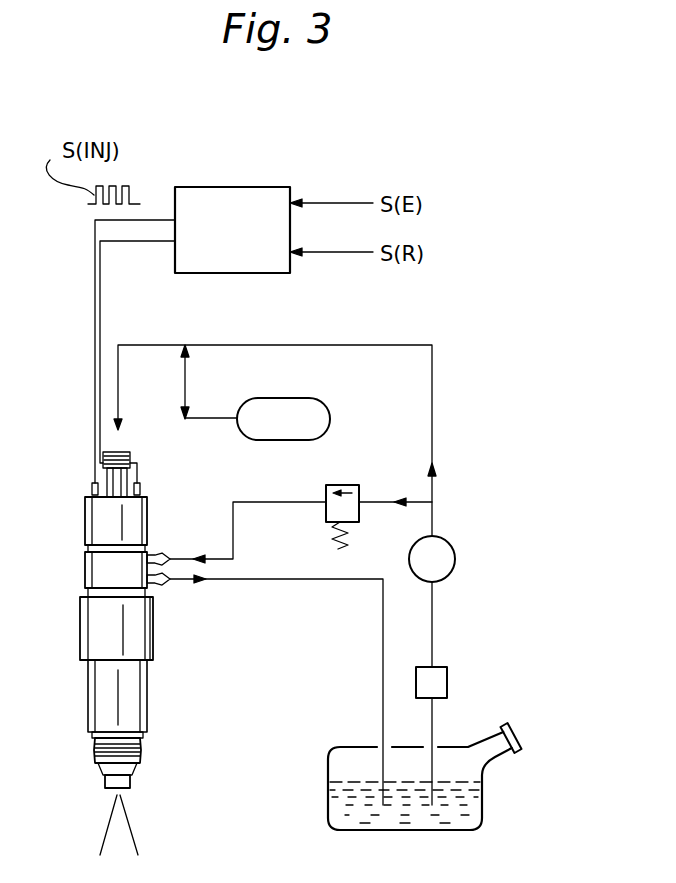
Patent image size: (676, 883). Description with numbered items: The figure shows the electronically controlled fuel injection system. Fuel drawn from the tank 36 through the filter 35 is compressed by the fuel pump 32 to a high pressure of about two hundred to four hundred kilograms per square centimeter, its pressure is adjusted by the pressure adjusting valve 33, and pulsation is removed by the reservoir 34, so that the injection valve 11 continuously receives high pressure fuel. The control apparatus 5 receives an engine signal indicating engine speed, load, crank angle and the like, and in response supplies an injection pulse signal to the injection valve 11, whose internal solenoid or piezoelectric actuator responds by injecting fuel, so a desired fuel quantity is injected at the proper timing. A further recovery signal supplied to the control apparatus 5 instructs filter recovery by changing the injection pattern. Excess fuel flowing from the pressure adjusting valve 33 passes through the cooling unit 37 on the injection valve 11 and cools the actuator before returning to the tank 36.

The control apparatus 5 is at (230, 187).
The injection valve 11 is at (112, 653).
The fuel pump 32 is at (455, 560).
The pressure adjusting valve 33 is at (342, 485).
The reservoir 34 is at (283, 442).
The fuel filter 35 is at (449, 682).
The fuel tank 36 is at (452, 745).
The cooling unit 37 is at (85, 571).